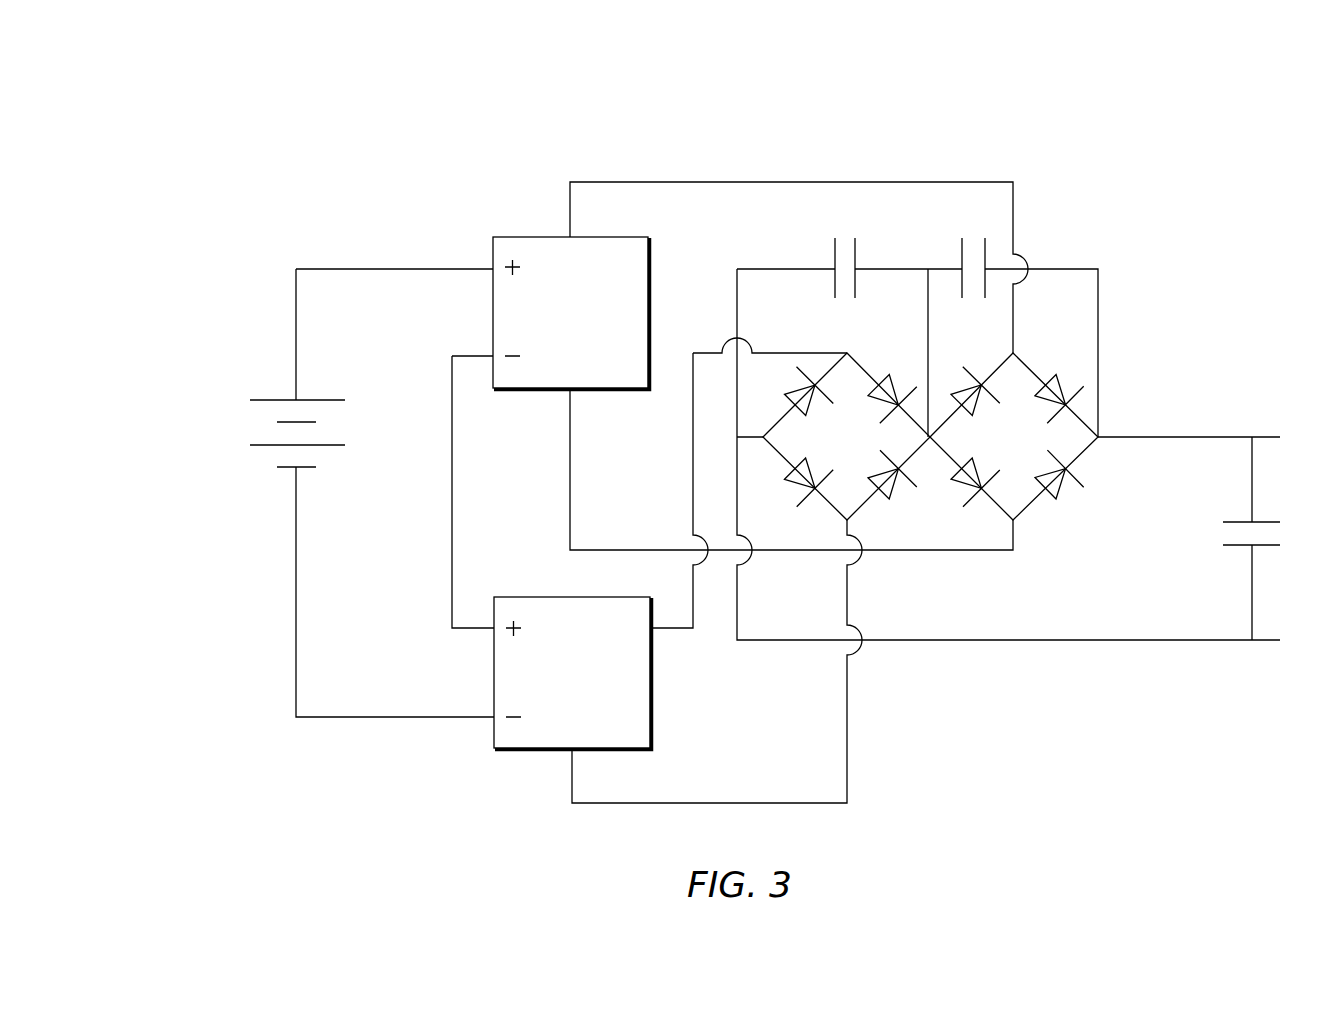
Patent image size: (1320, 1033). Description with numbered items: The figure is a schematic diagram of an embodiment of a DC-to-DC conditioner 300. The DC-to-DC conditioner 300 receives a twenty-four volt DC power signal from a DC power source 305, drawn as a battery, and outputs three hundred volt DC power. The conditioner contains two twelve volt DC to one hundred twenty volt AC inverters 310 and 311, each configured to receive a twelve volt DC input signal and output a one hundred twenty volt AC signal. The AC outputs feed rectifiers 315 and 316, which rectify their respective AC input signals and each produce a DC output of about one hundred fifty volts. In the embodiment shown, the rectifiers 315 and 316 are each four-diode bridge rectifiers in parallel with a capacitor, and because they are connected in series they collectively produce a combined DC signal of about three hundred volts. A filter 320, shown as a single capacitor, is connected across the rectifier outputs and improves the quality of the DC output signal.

The DC-to-DC conditioner 300 is at (470, 100).
The DC power source 305 is at (216, 450).
The inverter 310 is at (508, 235).
The inverter 311 is at (508, 752).
The rectifier 315 is at (913, 505).
The rectifier 316 is at (1079, 501).
The filter 320 is at (1238, 520).